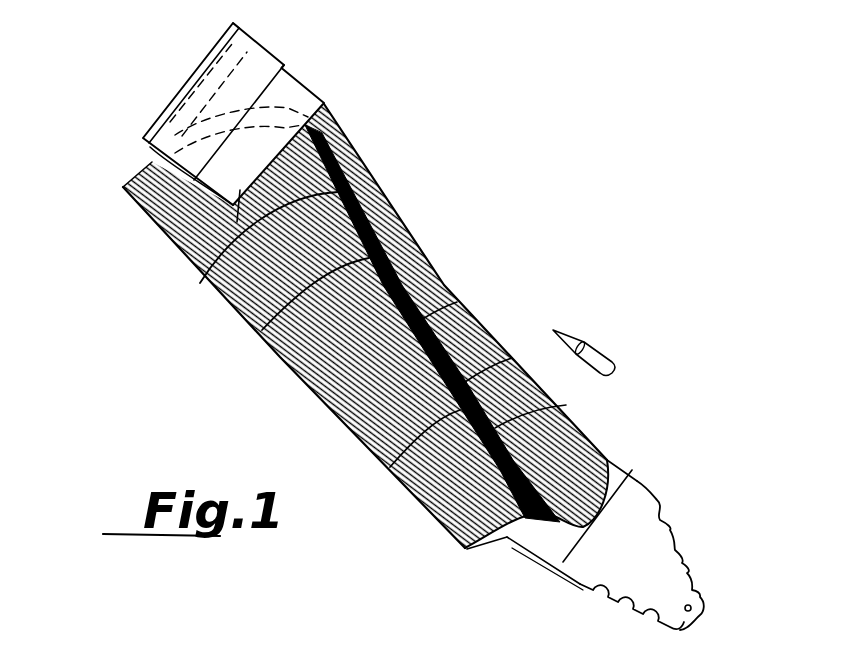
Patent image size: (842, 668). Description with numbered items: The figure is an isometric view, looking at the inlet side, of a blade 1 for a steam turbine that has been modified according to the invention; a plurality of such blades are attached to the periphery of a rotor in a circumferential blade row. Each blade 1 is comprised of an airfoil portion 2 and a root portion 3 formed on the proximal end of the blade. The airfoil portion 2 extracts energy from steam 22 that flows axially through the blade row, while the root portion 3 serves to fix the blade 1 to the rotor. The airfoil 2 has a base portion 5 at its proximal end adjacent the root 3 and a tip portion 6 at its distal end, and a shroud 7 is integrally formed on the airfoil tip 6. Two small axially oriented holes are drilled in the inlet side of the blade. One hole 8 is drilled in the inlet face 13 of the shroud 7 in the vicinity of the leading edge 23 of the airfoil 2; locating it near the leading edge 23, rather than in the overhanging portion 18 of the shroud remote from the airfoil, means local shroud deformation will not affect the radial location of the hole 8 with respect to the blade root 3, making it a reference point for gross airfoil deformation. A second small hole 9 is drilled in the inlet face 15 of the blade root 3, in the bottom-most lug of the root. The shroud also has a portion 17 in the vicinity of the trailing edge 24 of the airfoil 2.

The blade 1 is at (528, 197).
The airfoil portion 2 is at (402, 233).
The root portion 3 is at (627, 600).
The base portion 5 is at (442, 543).
The tip portion 6 is at (123, 206).
The shroud 7 is at (307, 80).
The hole 8 is at (303, 117).
The second hole 9 is at (703, 600).
The inlet face 13 is at (210, 283).
The inlet face 15 is at (648, 537).
The portion of the shroud 17 is at (143, 127).
The overhanging portion 18 is at (227, 33).
The steam 22 is at (607, 360).
The leading edge 23 is at (447, 282).
The trailing edge 24 is at (282, 368).